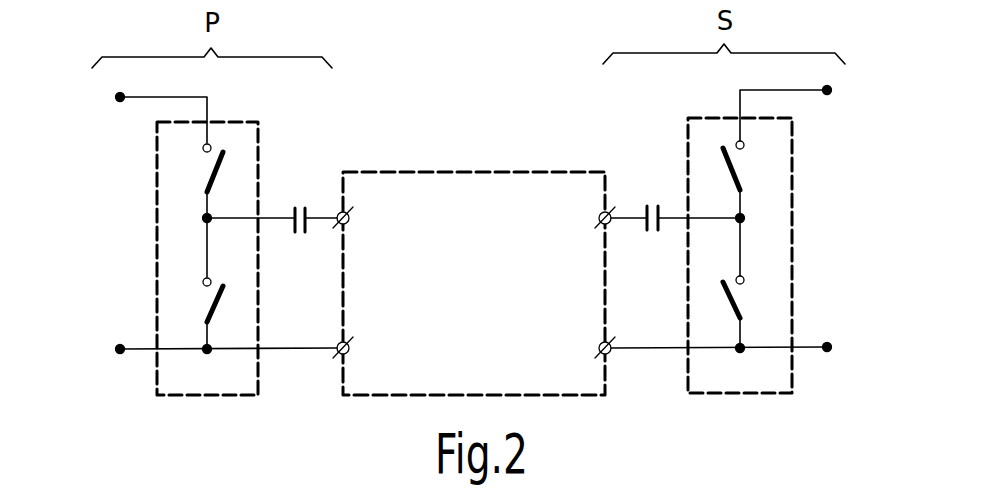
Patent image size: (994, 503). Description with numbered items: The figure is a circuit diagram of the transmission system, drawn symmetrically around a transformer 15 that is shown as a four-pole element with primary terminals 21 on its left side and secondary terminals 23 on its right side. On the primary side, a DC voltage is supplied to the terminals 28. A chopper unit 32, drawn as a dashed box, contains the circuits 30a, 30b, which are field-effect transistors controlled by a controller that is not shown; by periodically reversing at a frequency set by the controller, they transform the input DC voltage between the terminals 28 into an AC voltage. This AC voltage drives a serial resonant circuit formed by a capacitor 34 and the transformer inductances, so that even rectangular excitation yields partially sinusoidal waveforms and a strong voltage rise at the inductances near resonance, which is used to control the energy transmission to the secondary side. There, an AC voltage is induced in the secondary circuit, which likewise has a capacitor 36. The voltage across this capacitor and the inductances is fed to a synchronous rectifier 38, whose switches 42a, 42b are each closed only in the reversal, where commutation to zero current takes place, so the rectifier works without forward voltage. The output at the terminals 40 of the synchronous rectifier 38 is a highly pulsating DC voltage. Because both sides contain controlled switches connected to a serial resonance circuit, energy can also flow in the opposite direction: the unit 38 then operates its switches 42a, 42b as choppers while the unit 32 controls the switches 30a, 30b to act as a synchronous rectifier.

The transformer 15 is at (481, 291).
The primary terminals 21 is at (349, 222).
The secondary terminals 23 is at (599, 222).
The terminals 28 is at (116, 97).
The circuit 30a is at (202, 170).
The circuit 30b is at (202, 300).
The chopper unit 32 is at (205, 397).
The capacitor 34 is at (300, 233).
The capacitor 36 is at (652, 233).
The synchronous rectifier 38 is at (738, 395).
The terminals 40 is at (831, 90).
The switch 42a is at (743, 165).
The switch 42b is at (743, 297).